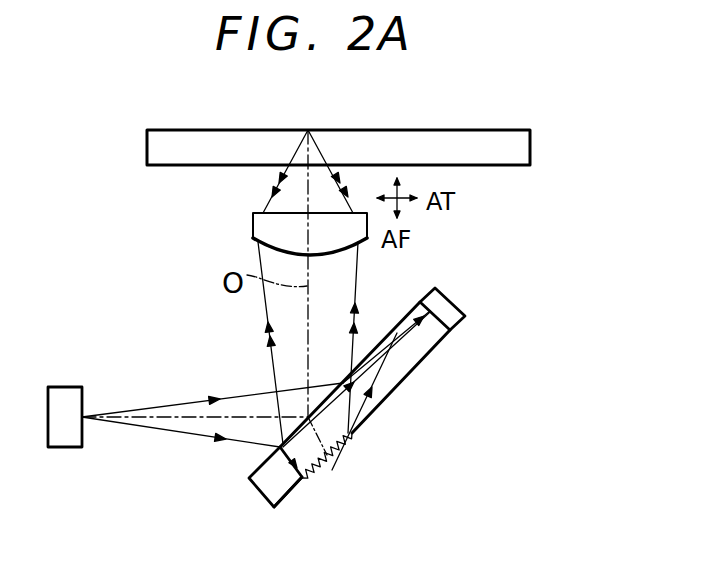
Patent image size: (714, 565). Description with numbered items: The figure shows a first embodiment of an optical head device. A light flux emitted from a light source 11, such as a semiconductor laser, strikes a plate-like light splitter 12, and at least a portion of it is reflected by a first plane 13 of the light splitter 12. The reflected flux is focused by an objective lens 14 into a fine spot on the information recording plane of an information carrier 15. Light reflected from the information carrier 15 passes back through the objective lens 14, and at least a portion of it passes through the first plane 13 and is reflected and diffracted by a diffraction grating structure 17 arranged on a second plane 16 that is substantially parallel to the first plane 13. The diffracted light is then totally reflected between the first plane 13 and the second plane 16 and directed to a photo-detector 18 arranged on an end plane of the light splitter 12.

The light source 11 is at (68, 387).
The plate-like light splitter 12 is at (262, 490).
The first plane 13 is at (260, 466).
The objective lens 14 is at (253, 230).
The information carrier 15 is at (477, 140).
The second plane 16 is at (287, 493).
The diffraction grating structure 17 is at (365, 445).
The photo-detector 18 is at (457, 302).